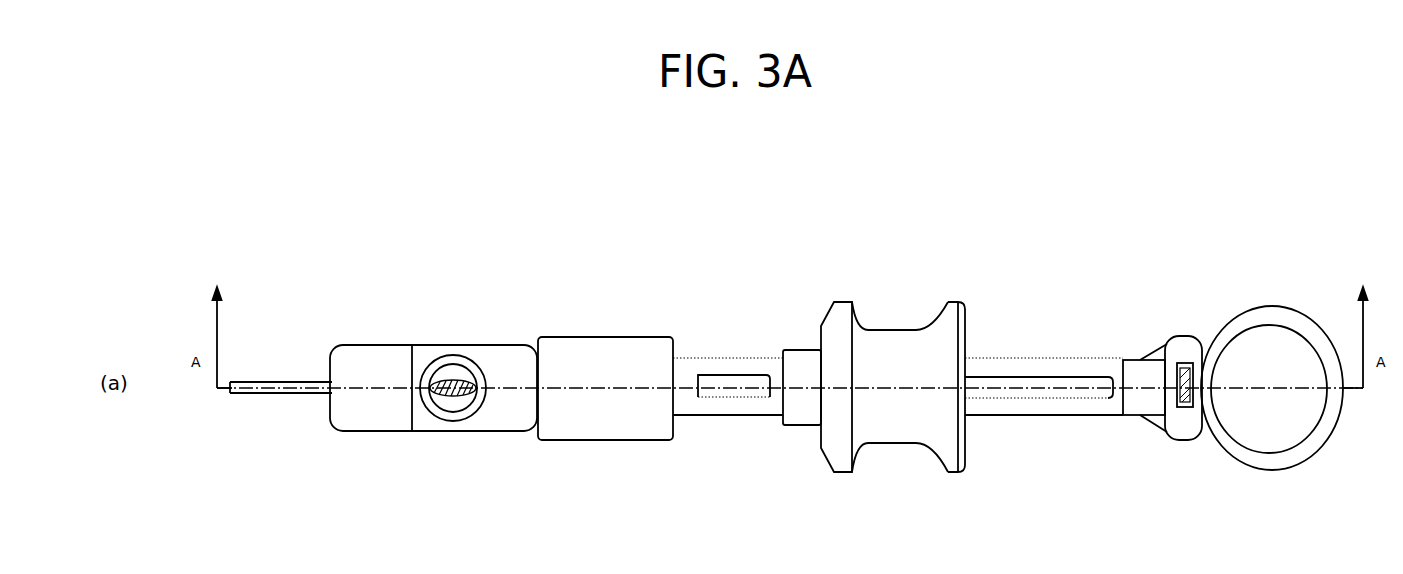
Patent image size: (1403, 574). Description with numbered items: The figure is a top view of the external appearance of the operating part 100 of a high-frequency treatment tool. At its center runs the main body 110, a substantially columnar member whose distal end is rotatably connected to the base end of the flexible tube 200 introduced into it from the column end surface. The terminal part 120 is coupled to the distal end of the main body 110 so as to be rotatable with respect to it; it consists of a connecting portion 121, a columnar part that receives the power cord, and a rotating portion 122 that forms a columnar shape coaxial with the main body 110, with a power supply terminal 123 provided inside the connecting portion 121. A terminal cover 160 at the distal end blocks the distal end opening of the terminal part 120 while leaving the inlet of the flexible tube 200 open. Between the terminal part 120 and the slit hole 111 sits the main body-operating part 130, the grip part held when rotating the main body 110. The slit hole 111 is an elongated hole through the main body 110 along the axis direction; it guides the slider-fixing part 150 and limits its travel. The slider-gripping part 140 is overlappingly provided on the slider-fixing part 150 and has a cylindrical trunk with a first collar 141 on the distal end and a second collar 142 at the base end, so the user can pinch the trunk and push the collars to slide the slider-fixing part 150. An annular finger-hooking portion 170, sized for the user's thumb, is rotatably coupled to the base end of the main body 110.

The operating part 100 is at (229, 228).
The main body 110 is at (703, 357).
The slit hole 111 is at (750, 382).
The terminal part 120 is at (456, 369).
The connecting portion 121 is at (472, 411).
The rotating portion 122 is at (430, 431).
The power supply terminal 123 is at (463, 372).
The main body-operating part 130 is at (605, 334).
The slider-gripping part 140 is at (902, 320).
The first collar 141 is at (838, 316).
The second collar 142 is at (950, 317).
The slider-fixing part 150 is at (802, 418).
The terminal cover 160 is at (365, 343).
The finger-hooking portion 170 is at (1275, 316).
The flexible tube 200 is at (278, 394).